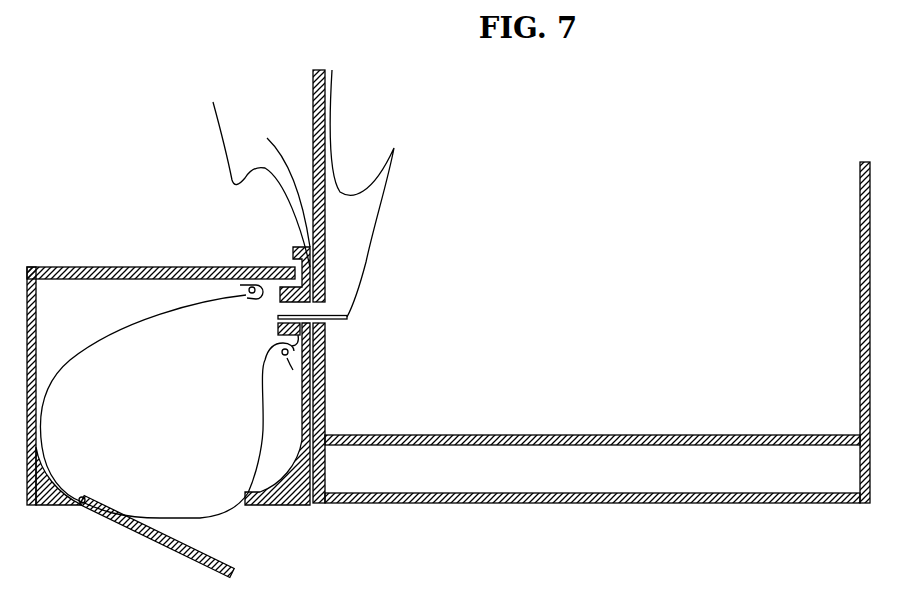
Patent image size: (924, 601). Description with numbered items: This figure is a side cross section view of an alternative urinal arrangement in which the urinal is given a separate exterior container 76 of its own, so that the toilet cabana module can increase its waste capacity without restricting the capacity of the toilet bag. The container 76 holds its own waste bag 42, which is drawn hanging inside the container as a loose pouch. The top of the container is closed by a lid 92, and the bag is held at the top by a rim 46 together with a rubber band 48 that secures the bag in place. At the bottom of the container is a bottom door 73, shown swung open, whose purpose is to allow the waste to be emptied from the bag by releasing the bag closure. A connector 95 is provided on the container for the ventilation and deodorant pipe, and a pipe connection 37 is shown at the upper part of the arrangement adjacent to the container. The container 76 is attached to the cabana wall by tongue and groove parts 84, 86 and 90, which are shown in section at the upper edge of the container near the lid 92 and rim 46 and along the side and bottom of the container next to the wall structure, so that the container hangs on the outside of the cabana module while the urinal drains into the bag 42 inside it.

The pipe connection 37 is at (372, 265).
The waste bag 42 is at (253, 480).
The rim 46 is at (267, 277).
The rubber band 48 is at (240, 285).
The bottom door 73 is at (158, 547).
The container 76 is at (18, 357).
The tongue and groove part 84 is at (239, 177).
The tongue and groove part 86 is at (269, 179).
The tongue and groove part 90 is at (305, 505).
The lid 92 is at (240, 263).
The connector 95 is at (345, 325).